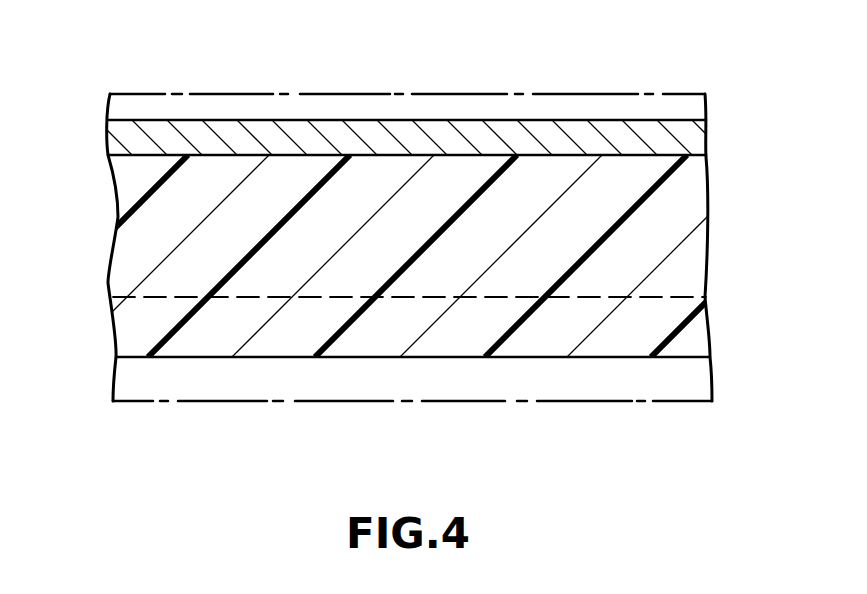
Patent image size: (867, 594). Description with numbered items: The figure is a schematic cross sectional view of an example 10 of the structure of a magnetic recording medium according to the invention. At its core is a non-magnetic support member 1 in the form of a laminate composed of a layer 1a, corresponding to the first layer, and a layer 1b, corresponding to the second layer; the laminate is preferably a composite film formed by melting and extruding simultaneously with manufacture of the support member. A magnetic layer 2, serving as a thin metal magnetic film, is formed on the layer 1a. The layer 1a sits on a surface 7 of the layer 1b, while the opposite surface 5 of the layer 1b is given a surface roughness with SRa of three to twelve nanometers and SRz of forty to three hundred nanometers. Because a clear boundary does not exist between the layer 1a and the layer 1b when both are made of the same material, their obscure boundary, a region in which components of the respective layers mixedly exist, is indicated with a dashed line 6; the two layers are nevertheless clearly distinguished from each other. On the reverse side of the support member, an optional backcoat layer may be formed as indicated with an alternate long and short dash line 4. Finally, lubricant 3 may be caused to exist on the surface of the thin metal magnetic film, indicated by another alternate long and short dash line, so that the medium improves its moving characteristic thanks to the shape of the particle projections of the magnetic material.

The magnetic recording medium 10 is at (203, 86).
The lubricant 3 is at (677, 108).
The magnetic layer 2 is at (685, 145).
The surface 7 is at (458, 155).
The non-magnetic support member 1 is at (104, 157).
The layer 1a (first layer) 1a is at (714, 157).
The layer 1b (second layer) 1b is at (714, 298).
The dashed line 6 is at (337, 300).
The surface 5 is at (190, 357).
The alternate long and short dash line (backcoat layer) 4 is at (570, 378).